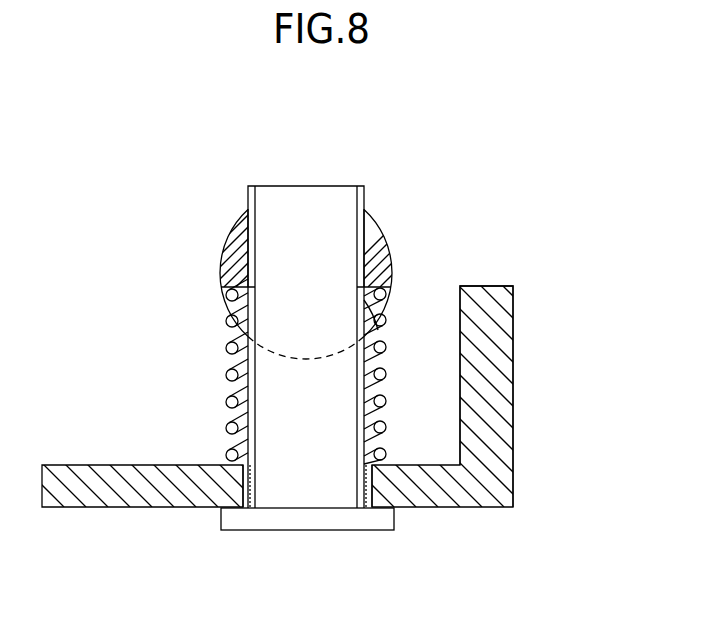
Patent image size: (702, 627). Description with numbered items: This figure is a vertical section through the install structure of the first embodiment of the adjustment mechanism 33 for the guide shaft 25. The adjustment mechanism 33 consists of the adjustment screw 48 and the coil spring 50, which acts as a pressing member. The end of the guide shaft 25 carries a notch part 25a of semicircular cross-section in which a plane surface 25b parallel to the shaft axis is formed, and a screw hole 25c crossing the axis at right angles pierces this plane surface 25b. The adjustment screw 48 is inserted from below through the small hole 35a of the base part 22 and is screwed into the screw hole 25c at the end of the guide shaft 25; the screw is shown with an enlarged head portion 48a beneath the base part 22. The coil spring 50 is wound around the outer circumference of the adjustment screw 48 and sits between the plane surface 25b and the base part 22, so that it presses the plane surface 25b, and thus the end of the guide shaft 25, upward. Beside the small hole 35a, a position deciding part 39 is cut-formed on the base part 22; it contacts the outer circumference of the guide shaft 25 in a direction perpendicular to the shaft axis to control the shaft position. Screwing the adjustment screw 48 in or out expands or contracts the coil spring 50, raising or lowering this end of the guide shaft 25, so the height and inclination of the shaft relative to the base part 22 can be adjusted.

The base part 22 is at (495, 507).
The position deciding part 39 is at (485, 285).
The small hole 35a is at (237, 487).
The adjustment screw 48 is at (310, 197).
The flange of guide tube 48a is at (367, 530).
The guide shaft 25 is at (381, 217).
The notch part 25a is at (384, 304).
The plane surface 25b is at (228, 305).
The screw hole 25c is at (263, 237).
The coil spring 50 is at (225, 377).
The adjustment mechanism 33 is at (495, 127).